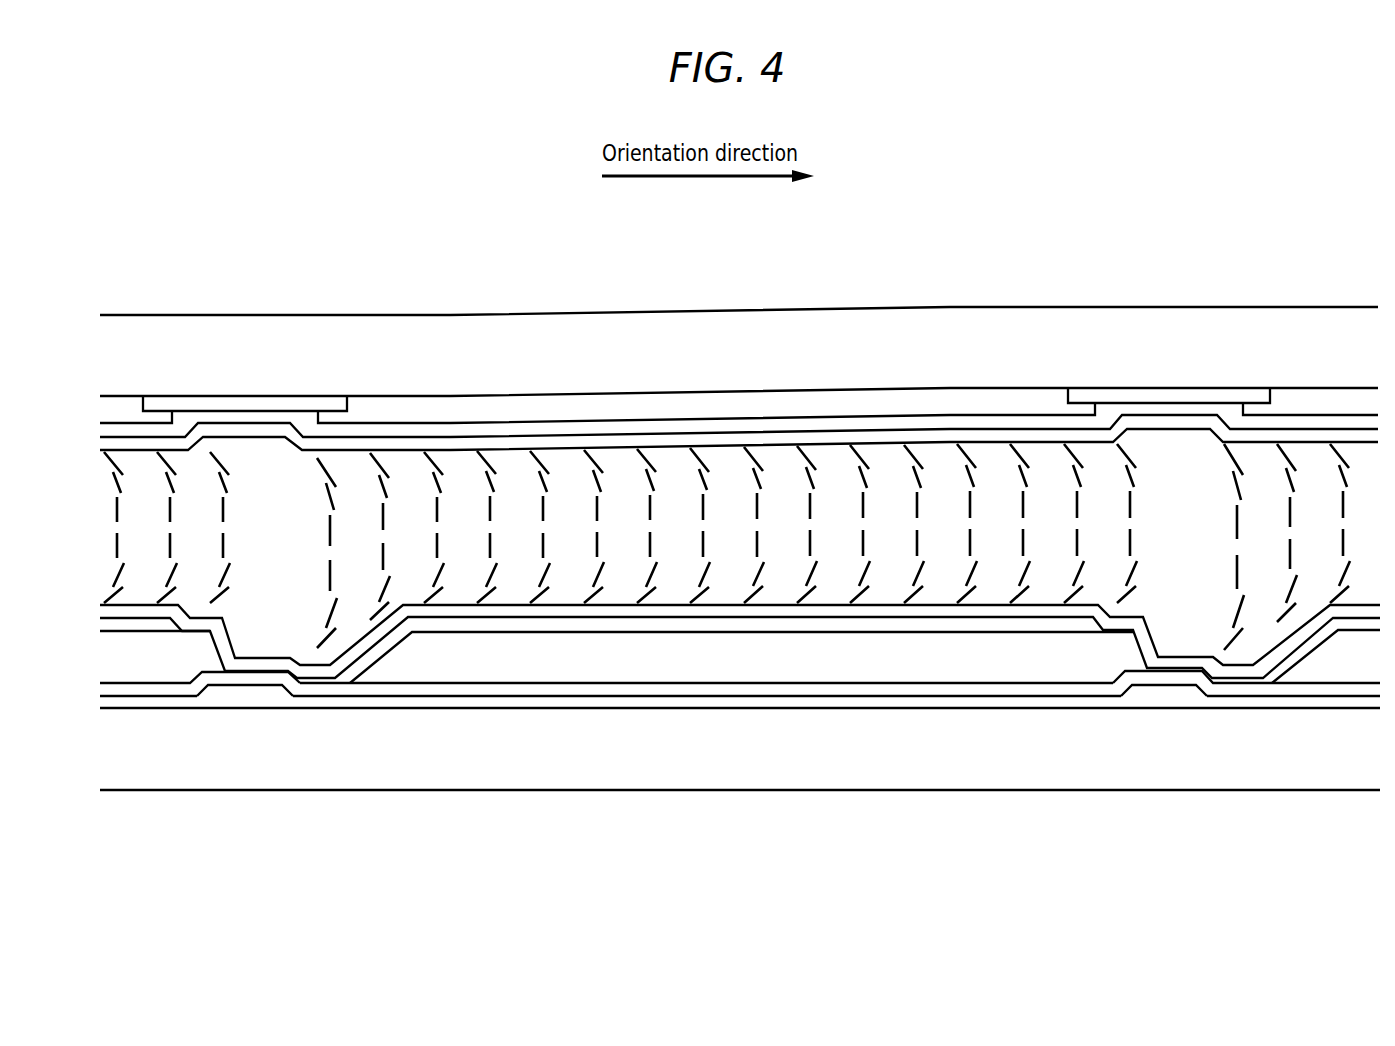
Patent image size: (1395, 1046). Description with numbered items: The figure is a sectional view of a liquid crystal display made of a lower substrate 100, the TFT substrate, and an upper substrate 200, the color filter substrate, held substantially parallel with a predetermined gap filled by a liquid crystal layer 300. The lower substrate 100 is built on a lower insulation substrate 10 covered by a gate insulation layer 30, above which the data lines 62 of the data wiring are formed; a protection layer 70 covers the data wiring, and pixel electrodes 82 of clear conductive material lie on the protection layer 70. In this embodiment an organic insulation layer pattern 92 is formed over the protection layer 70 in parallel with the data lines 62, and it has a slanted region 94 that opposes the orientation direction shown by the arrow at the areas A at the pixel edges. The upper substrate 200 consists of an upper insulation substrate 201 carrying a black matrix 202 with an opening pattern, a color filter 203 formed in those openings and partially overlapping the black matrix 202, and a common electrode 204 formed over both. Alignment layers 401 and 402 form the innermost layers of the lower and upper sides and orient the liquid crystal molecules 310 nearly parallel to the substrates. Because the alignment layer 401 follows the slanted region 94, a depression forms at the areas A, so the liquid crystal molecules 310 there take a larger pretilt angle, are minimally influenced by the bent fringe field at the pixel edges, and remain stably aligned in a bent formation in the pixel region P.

The lower insulation substrate 10 is at (630, 778).
The gate insulation layer 30 is at (525, 707).
The data lines 62 is at (245, 693).
The protection layer 70 is at (473, 693).
The pixel electrodes 82 is at (787, 625).
The organic insulation layer pattern 92 is at (952, 667).
The slanted region 94 is at (372, 662).
The lower substrate 100 is at (741, 840).
The upper substrate 200 is at (685, 284).
The upper insulation substrate 201 is at (832, 322).
The black matrix 202 is at (1162, 395).
The color filter 203 is at (607, 400).
The common electrode 204 is at (922, 425).
The liquid crystal layer 300 is at (1198, 642).
The liquid crystal molecules 310 is at (858, 590).
The alignment layer 401 is at (1253, 668).
The alignment layer 402 is at (501, 440).